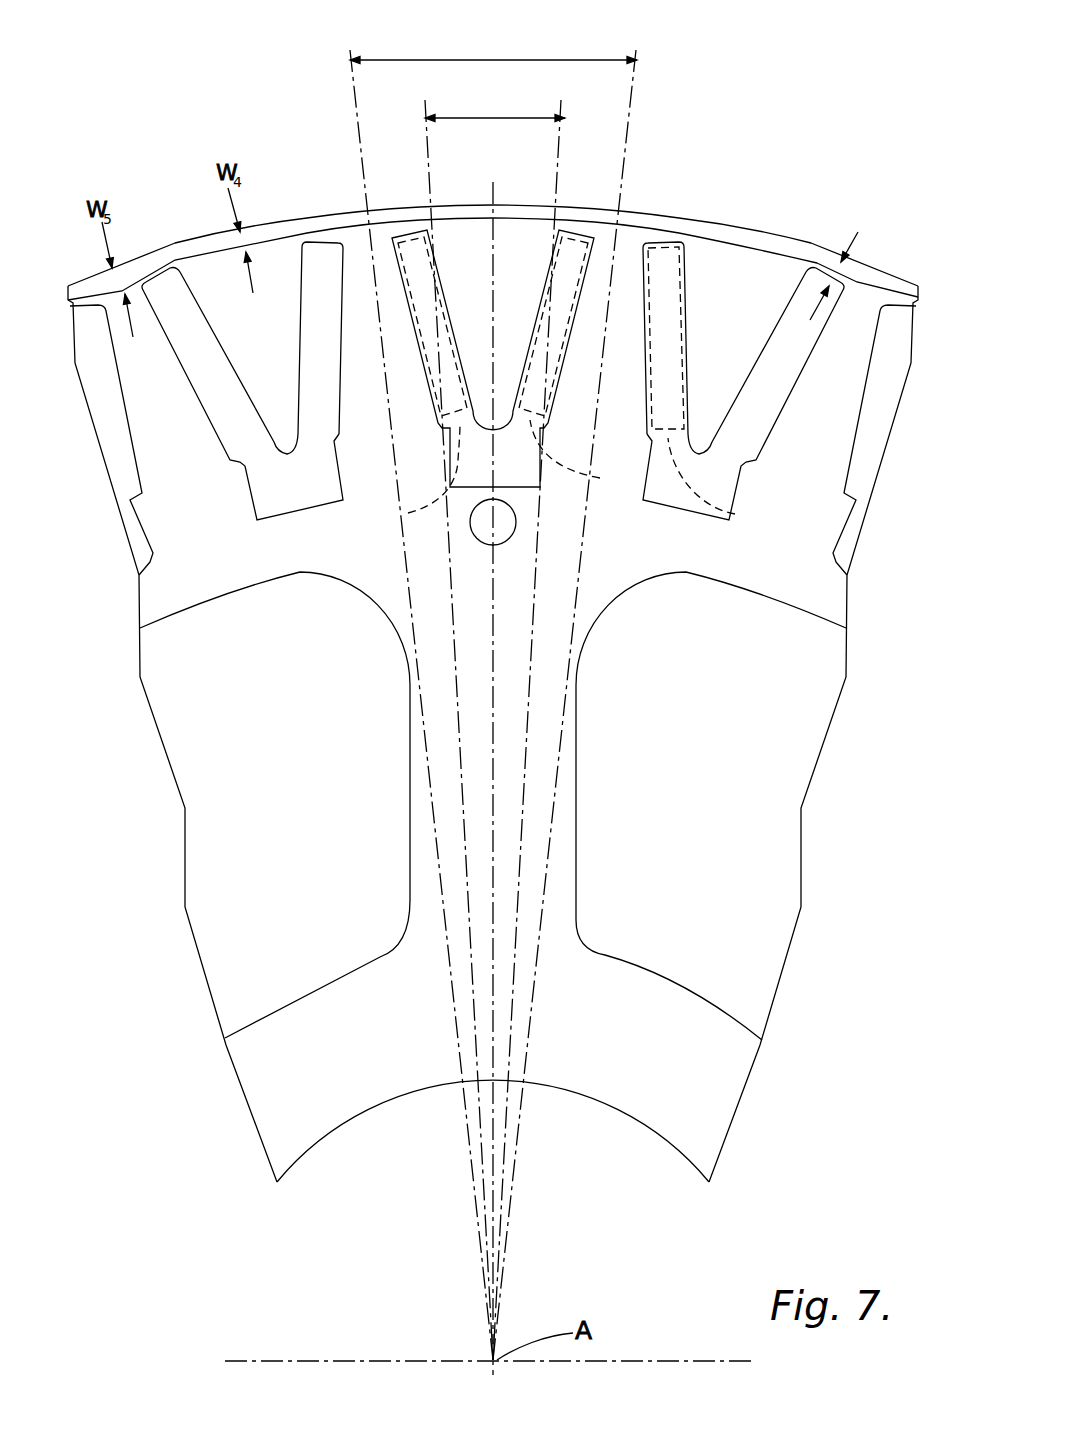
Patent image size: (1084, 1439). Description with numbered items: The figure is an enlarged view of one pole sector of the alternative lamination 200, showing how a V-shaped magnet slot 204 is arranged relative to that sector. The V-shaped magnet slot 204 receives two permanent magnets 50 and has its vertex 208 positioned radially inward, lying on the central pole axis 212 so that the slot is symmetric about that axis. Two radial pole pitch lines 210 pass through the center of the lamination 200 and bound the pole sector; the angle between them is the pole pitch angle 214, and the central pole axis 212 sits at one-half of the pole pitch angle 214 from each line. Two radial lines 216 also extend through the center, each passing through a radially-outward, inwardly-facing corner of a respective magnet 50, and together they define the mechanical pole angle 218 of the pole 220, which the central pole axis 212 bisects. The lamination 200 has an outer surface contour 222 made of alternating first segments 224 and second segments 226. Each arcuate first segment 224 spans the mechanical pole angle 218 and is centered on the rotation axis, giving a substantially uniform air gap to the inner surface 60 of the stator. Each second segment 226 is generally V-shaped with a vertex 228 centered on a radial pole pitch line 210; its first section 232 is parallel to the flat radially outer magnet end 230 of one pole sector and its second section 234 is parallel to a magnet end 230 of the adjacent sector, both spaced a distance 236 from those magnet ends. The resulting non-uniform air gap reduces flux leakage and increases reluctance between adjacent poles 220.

The lamination 200 is at (812, 55).
The V-shaped magnet slot 204 is at (810, 358).
The vertex 208 is at (467, 503).
The radial pole pitch line 210 is at (350, 73).
The central pole axis 212 is at (494, 722).
The pole pitch angle 214 is at (432, 57).
The radial line 216 is at (424, 110).
The mechanical pole angle 218 is at (477, 117).
The pole 220 is at (428, 232).
The outer surface contour 222 is at (788, 252).
The first segment 224 is at (463, 216).
The second segment 226 is at (463, 272).
The vertex 228 is at (618, 232).
The radially outer magnet end 230 is at (577, 233).
The first section 232 is at (593, 228).
The second section 234 is at (653, 228).
The distance 236 is at (858, 232).
The magnet 50 is at (408, 513).
The inner surface 60 is at (185, 243).